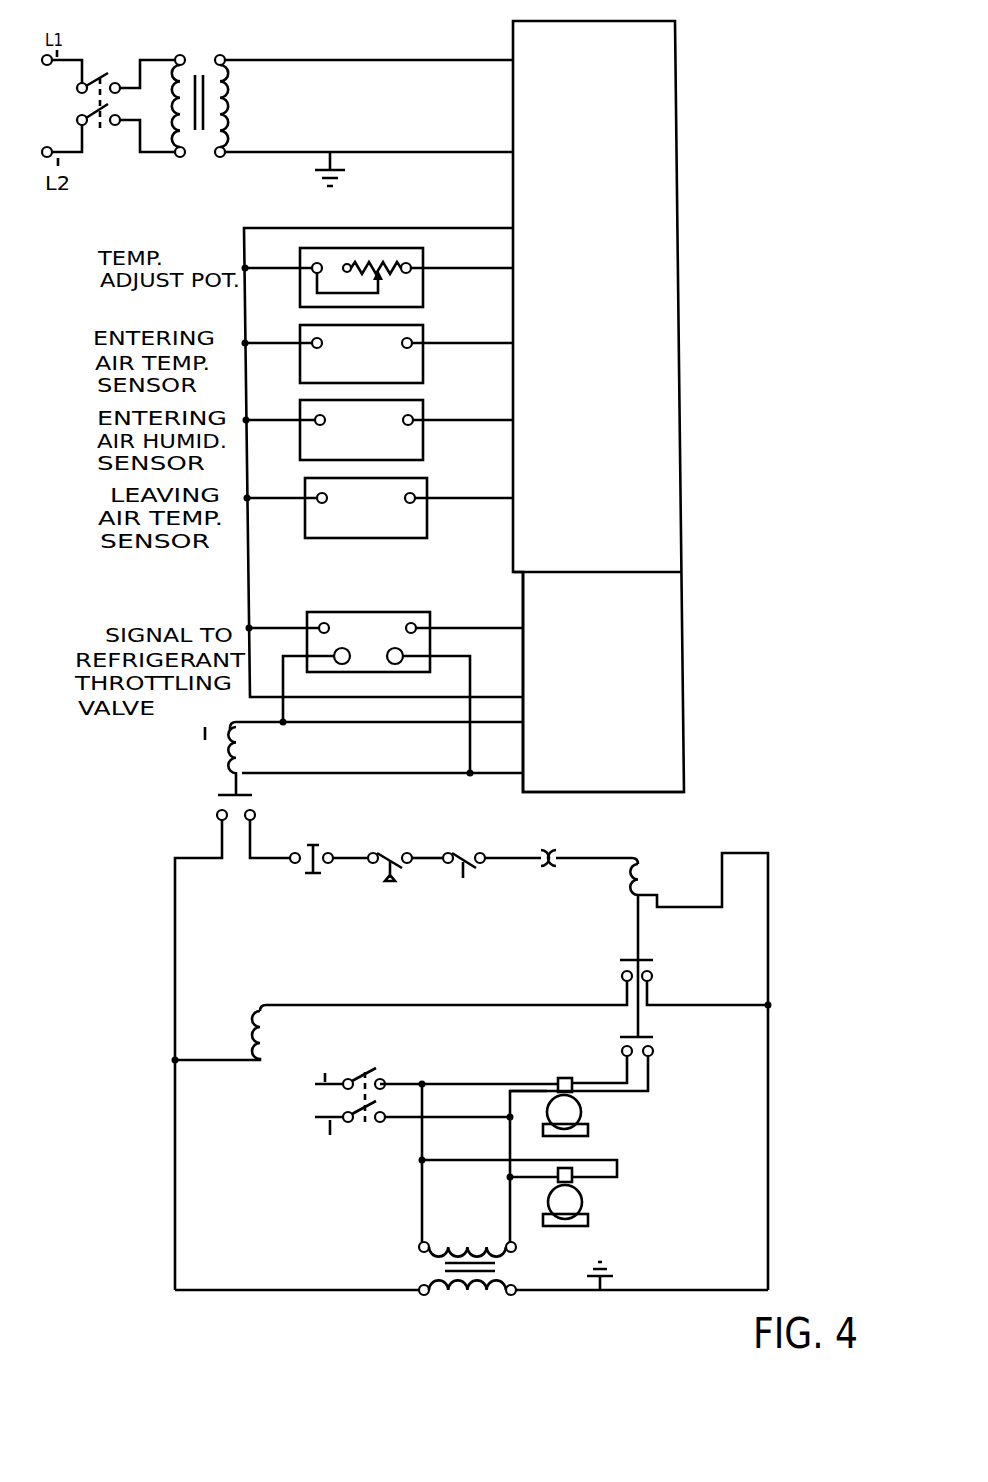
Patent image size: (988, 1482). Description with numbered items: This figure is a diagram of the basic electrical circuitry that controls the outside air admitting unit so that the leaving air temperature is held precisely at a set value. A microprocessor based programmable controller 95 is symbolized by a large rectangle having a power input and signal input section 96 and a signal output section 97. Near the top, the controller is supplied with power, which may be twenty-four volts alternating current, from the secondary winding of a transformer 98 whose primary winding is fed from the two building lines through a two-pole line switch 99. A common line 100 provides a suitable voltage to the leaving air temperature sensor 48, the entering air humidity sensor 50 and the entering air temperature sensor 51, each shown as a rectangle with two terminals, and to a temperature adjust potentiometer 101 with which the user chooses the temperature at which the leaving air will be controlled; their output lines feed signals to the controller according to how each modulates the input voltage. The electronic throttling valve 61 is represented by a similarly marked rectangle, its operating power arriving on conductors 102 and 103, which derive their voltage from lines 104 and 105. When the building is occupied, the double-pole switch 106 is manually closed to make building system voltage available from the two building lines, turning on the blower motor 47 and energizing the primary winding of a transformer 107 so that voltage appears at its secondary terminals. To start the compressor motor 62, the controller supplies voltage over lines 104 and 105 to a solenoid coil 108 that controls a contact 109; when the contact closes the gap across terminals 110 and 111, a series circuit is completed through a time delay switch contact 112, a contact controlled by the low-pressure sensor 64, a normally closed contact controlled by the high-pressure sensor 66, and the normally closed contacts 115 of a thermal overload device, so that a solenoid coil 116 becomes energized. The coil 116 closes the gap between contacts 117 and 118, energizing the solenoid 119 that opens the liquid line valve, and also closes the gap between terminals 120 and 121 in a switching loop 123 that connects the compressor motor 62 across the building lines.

The two-pole line switch 99 is at (101, 77).
The transformer 98 is at (198, 68).
The programmable controller 95 is at (690, 378).
The power input and signal input section 96 is at (668, 532).
The signal output section 97 is at (672, 666).
The common line 100 is at (495, 226).
The temperature adjust potentiometer 101 is at (423, 290).
The entering air temperature sensor 51 is at (418, 364).
The entering air humidity sensor 50 is at (415, 450).
The leaving air temperature sensor 48 is at (415, 525).
The electronic throttling valve 61 is at (398, 613).
The conductor 102 is at (280, 708).
The conductor 103 is at (472, 683).
The line 104 is at (400, 727).
The line 105 is at (403, 778).
The solenoid coil 108 is at (229, 752).
The contact 109 is at (253, 794).
The terminal 110 is at (217, 813).
The terminal 111 is at (257, 812).
The high-pressure sensor 66 is at (318, 855).
The low-pressure sensor 64 is at (386, 855).
The time delay switch contact 112 is at (463, 850).
The contacts of thermal overload device 115 is at (548, 852).
The solenoid coil 116 is at (647, 873).
The contact 117 is at (622, 975).
The contact 118 is at (654, 977).
The terminal 120 is at (623, 1048).
The terminal 121 is at (655, 1052).
The switching loop 123 is at (588, 1081).
The solenoid 119 is at (270, 1030).
The double-pole switch 106 is at (380, 1074).
The compressor motor 62 is at (583, 1108).
The blower motor 47 is at (583, 1198).
The transformer 107 is at (438, 1272).